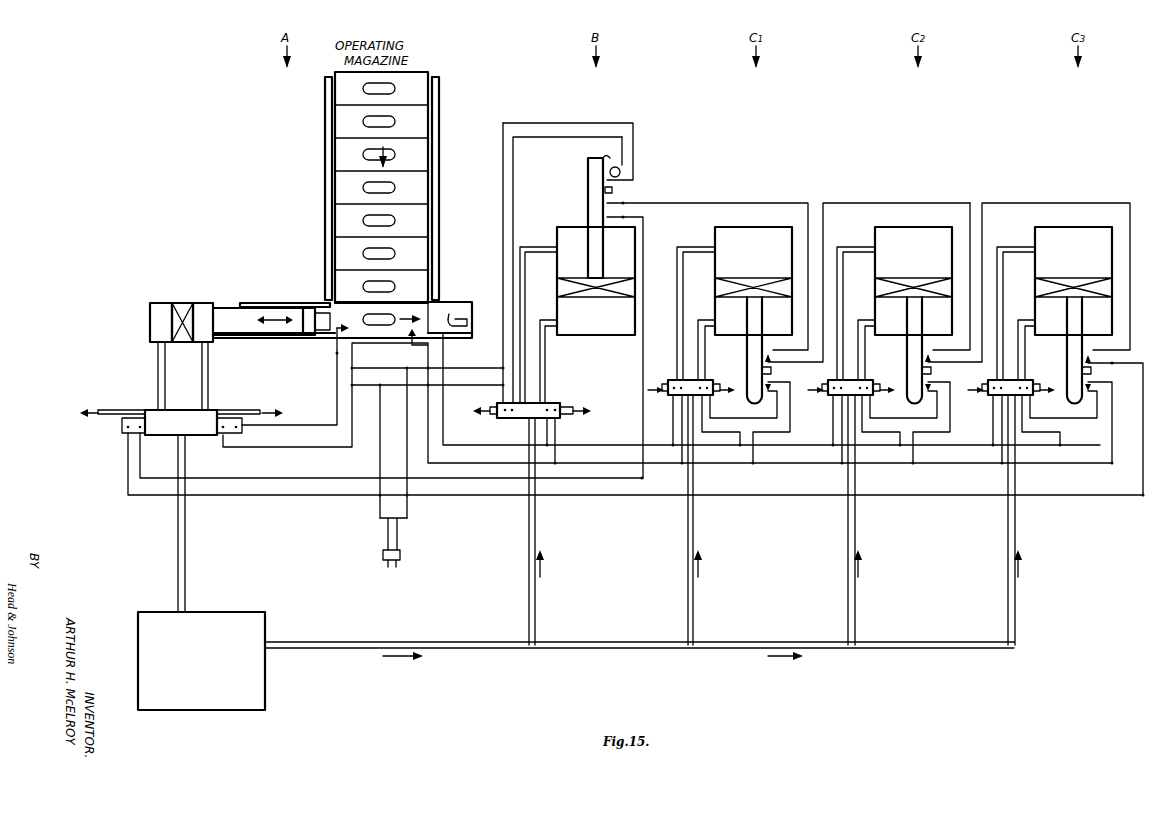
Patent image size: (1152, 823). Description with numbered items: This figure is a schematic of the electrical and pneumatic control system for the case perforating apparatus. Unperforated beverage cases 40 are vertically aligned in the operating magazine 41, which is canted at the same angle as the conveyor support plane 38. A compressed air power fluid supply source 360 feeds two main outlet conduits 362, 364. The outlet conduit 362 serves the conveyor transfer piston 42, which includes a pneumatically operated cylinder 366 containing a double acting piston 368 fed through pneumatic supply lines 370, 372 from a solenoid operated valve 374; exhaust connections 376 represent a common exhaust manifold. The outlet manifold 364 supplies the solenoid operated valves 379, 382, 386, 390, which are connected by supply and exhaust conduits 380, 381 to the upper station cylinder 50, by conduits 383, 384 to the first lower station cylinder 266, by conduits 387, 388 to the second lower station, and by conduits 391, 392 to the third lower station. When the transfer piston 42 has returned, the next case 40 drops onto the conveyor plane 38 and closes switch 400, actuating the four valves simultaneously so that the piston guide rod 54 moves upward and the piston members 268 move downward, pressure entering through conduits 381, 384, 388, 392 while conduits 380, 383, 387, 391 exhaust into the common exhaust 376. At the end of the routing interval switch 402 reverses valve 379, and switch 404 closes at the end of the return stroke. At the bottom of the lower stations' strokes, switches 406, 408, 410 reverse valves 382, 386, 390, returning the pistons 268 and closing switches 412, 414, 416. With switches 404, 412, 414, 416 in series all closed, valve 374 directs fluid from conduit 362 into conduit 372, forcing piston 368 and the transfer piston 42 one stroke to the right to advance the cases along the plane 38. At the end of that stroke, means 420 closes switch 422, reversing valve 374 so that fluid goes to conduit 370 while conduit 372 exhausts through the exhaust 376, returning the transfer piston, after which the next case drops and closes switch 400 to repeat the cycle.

The conveyor support plane 38 is at (470, 320).
The beverage case 40 is at (347, 183).
The operating magazine 41 is at (440, 188).
The conveyor transfer piston 42 is at (300, 302).
The station B cylinder 50 is at (612, 338).
The piston guide rod 54 is at (588, 196).
The station C1 cylinder 266 is at (724, 230).
The piston member 268 is at (750, 312).
The power fluid supply source 360 is at (265, 627).
The outlet conduit 362 is at (186, 560).
The outlet manifold 364 is at (408, 642).
The pneumatically operated cylinder 366 is at (160, 303).
The double acting piston 368 is at (183, 303).
The pneumatic supply line 370 is at (209, 378).
The pneumatic supply line 372 is at (157, 372).
The valve 374 is at (196, 410).
The exhaust connections 376 is at (104, 410).
The solenoid operated valve 379 is at (550, 403).
The supply and/or exhaust conduit 380 is at (545, 320).
The supply and/or exhaust conduit 381 is at (540, 247).
The solenoid operated valve 382 is at (705, 380).
The supply and/or exhaust conduit 383 is at (700, 320).
The supply and/or exhaust conduit 384 is at (690, 238).
The solenoid operated valve 386 is at (865, 380).
The supply and/or exhaust conduit 387 is at (860, 320).
The supply and/or exhaust conduit 388 is at (850, 238).
The solenoid operated valve 390 is at (1025, 380).
The supply and/or exhaust conduit 391 is at (1020, 320).
The supply and/or exhaust conduit 392 is at (1010, 238).
The switch 400 is at (414, 346).
The switch 402 is at (614, 167).
The switch 404 is at (610, 217).
The switch 406 is at (763, 398).
The switch 408 is at (923, 398).
The switch 410 is at (1087, 402).
The switch 412 is at (771, 355).
The switch 414 is at (931, 355).
The switch 416 is at (1091, 355).
The means 420 is at (258, 338).
The switch 422 is at (357, 348).